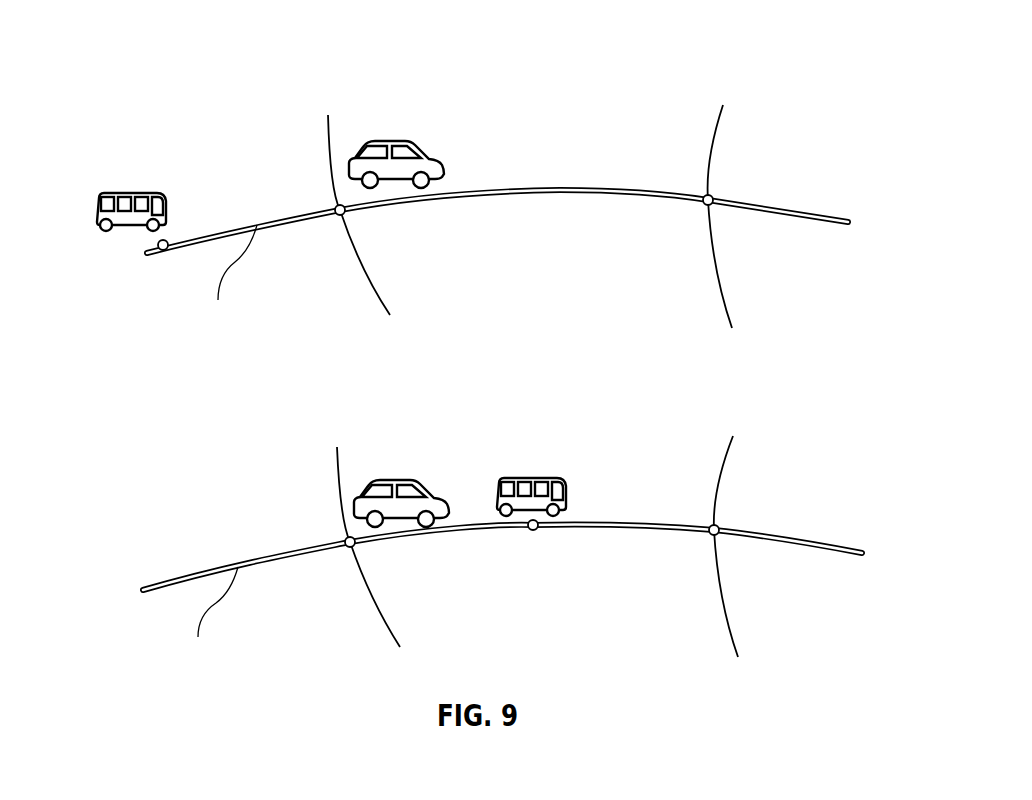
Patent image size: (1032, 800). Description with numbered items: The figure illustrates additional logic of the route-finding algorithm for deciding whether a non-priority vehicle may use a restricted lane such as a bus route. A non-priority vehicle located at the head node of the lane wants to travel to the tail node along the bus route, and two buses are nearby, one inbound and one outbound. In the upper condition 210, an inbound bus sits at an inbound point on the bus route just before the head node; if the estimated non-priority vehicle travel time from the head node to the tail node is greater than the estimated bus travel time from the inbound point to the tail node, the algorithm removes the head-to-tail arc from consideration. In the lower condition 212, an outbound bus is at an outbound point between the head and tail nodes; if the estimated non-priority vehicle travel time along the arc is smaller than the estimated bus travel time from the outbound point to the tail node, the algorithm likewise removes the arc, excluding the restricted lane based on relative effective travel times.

The upper condition 210 is at (367, 107).
The lower condition 212 is at (455, 427).